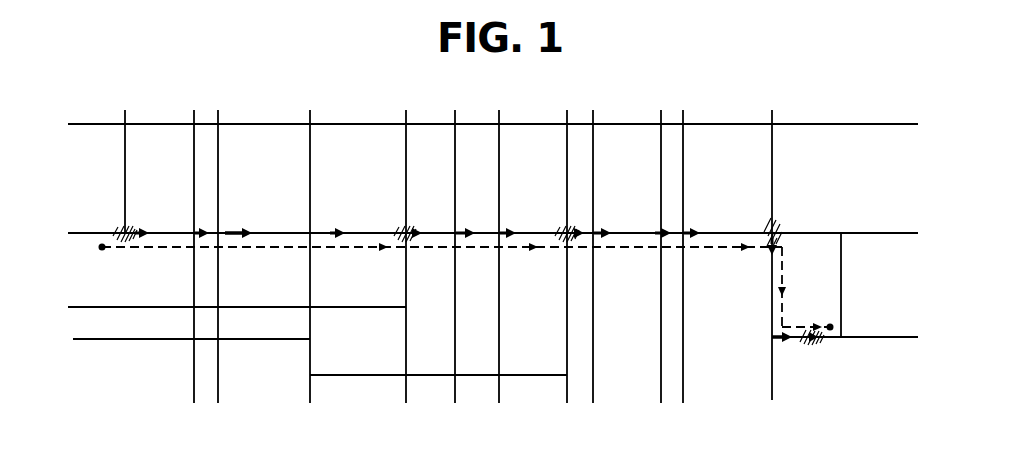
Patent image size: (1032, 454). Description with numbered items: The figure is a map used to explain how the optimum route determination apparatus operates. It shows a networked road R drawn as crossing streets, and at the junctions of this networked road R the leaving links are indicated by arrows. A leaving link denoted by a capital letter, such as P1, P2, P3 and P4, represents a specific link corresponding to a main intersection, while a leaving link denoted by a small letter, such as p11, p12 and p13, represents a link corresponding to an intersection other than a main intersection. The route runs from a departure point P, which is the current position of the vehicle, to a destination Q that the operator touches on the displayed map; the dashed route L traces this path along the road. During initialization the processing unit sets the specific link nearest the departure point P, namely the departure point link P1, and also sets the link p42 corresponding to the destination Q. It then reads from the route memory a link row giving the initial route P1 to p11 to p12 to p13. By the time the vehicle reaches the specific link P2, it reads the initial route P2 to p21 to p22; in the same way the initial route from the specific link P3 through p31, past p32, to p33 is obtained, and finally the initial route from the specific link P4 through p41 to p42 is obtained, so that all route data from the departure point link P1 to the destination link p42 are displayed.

The networked road R is at (858, 124).
The route (travel path) L is at (360, 249).
The departure point P is at (100, 247).
The destination Q is at (830, 327).
The departure point link P1 is at (121, 230).
The link p11 is at (194, 233).
The link p12 is at (238, 229).
The link p13 is at (333, 231).
The specific link P2 is at (403, 228).
The link p21 is at (456, 233).
The link p22 is at (501, 233).
The specific link P3 is at (563, 228).
The link p31 is at (597, 233).
The link p32 is at (660, 233).
The link p33 is at (688, 233).
The specific link P4 is at (767, 228).
The link p41 is at (776, 340).
The destination link p42 is at (801, 343).